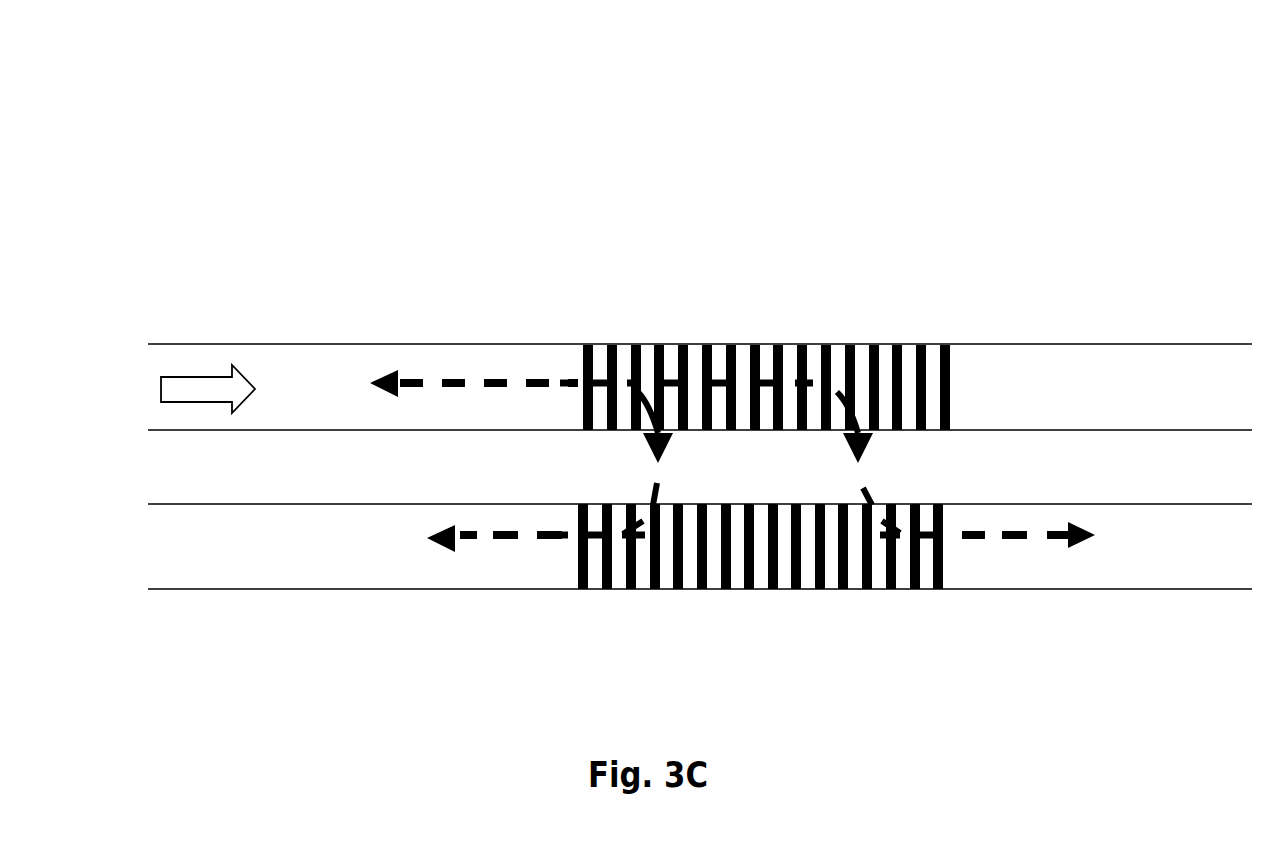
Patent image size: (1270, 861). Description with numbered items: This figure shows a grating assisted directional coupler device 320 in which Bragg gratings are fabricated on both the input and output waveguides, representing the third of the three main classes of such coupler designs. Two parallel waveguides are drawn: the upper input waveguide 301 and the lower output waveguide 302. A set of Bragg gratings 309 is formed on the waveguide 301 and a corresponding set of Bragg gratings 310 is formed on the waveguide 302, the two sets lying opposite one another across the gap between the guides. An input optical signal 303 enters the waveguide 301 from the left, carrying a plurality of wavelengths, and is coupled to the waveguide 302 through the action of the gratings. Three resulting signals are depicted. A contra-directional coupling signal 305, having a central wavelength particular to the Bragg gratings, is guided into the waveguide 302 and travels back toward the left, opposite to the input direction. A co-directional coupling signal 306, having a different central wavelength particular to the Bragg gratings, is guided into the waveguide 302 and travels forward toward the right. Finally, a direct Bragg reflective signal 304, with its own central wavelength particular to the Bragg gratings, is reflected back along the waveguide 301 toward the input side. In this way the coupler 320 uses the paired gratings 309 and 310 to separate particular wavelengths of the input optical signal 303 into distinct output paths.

The waveguide 301 is at (1065, 365).
The waveguide 302 is at (222, 543).
The input optical signal 303 is at (218, 385).
The direct Bragg reflective signal 304 is at (470, 372).
The contra-directional coupling signal 305 is at (507, 542).
The co-directional coupling signal 306 is at (1040, 539).
The Bragg gratings 309 is at (877, 367).
The Bragg gratings 310 is at (800, 540).
The grating-assisted waveguide coupler 320 is at (1088, 122).